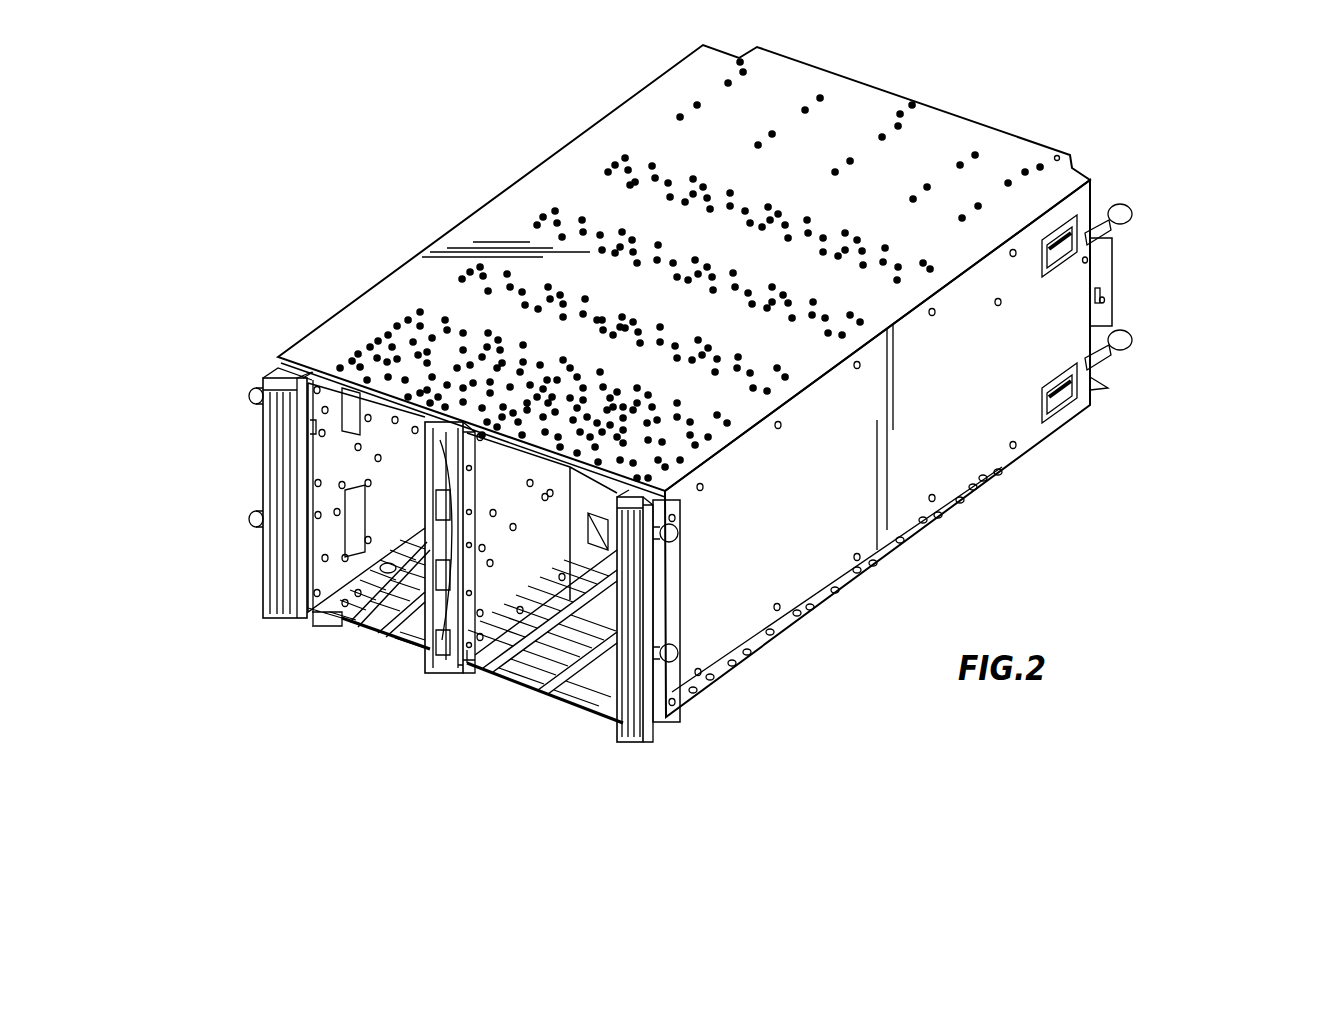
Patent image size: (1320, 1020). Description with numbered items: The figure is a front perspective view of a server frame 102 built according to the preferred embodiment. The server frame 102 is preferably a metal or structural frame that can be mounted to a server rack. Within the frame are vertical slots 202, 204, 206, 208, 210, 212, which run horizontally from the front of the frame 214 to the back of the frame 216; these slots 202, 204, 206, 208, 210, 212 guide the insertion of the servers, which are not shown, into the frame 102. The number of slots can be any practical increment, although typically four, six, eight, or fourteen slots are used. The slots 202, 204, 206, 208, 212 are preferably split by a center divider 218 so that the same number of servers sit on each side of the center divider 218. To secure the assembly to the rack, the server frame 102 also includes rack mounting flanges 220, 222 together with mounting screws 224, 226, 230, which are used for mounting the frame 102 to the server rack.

The server frame 102 is at (498, 222).
The vertical slot 202 is at (365, 628).
The vertical slot 204 is at (405, 643).
The vertical slot 206 is at (413, 650).
The vertical slot 208 is at (250, 396).
The vertical slot 210 is at (527, 690).
The vertical slot 212 is at (567, 690).
The front of the frame 214 is at (700, 697).
The back of the frame 216 is at (1113, 272).
The center divider 218 is at (443, 428).
The rack mounting flange 220 is at (687, 570).
The rack mounting flange 222 is at (277, 372).
The mounting screw 224 is at (687, 527).
The mounting screw 226 is at (687, 643).
The mounting screw 230 is at (250, 517).